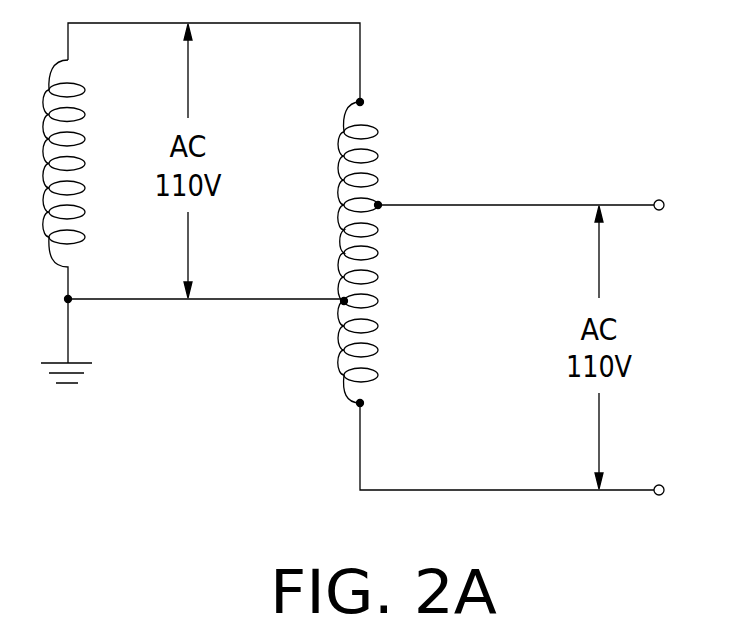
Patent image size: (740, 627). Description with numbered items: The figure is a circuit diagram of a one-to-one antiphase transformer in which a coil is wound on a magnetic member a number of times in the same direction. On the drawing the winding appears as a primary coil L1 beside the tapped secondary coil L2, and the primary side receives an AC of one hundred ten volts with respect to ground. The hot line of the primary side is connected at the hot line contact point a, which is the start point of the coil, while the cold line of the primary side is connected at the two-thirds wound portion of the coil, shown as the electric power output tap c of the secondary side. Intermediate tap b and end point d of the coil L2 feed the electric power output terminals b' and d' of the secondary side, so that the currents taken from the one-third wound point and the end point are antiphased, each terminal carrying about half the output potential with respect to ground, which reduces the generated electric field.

The primary coil L1 is at (64, 179).
The secondary coil (autotransformer winding) L2 is at (358, 252).
The hot line contact point of the primary side a is at (373, 100).
The tap terminal b is at (515, 191).
The electric power output tap of the secondary side c is at (332, 288).
The terminal d is at (506, 441).
The electric power output terminal of the secondary side b' is at (677, 205).
The electric power output terminal of the secondary side d' is at (677, 489).